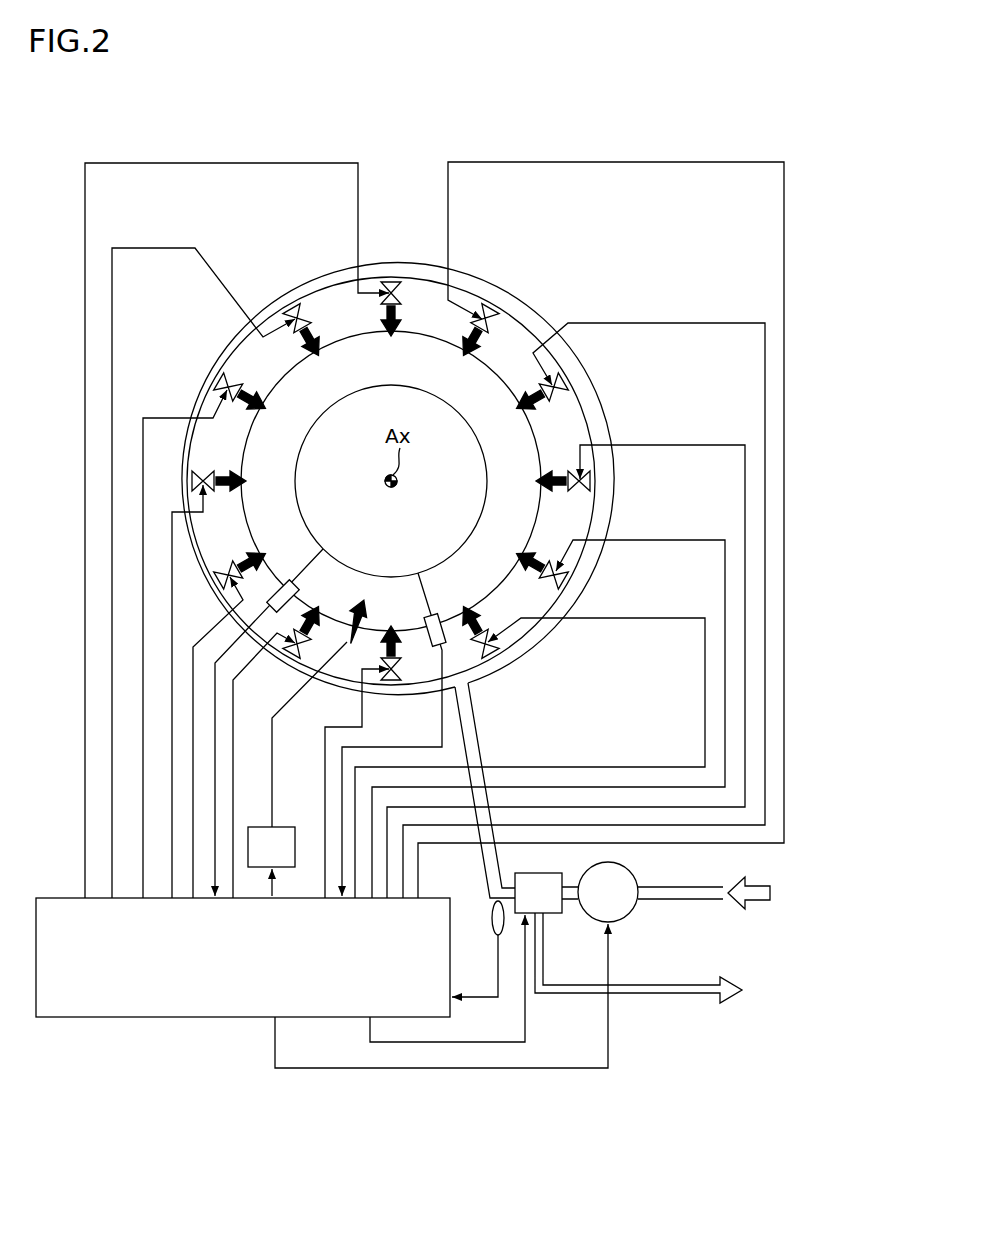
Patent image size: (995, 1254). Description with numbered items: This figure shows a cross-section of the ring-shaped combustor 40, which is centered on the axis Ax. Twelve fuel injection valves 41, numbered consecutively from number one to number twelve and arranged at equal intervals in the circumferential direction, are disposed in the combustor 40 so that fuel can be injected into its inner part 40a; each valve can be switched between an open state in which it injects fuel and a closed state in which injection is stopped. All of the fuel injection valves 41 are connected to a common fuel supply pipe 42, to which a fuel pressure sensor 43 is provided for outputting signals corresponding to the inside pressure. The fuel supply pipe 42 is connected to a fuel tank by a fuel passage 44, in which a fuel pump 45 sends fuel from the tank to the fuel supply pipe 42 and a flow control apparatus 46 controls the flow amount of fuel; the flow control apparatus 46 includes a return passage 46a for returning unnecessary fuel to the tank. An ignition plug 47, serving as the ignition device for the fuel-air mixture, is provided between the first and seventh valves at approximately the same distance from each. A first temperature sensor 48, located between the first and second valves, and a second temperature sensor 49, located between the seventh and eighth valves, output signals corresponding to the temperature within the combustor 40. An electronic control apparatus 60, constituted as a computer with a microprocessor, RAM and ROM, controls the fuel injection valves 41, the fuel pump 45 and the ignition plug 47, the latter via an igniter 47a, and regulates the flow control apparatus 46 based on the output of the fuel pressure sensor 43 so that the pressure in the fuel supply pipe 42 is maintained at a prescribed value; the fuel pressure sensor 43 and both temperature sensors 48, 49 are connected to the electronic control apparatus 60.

The combustor 40 is at (404, 176).
The inner part 40a is at (352, 360).
The fuel injection valve 41 is at (398, 289).
The fuel supply pipe 42 is at (478, 700).
The fuel pressure sensor 43 is at (493, 912).
The fuel passage 44 is at (680, 900).
The fuel pump 45 is at (622, 918).
The flow control apparatus 46 is at (548, 914).
The return passage 46a is at (668, 995).
The ignition plug 47 is at (360, 600).
The igniter 47a is at (282, 826).
The first temperature sensor 48 is at (432, 620).
The second temperature sensor 49 is at (288, 585).
The electronic control apparatus 60 is at (175, 1018).